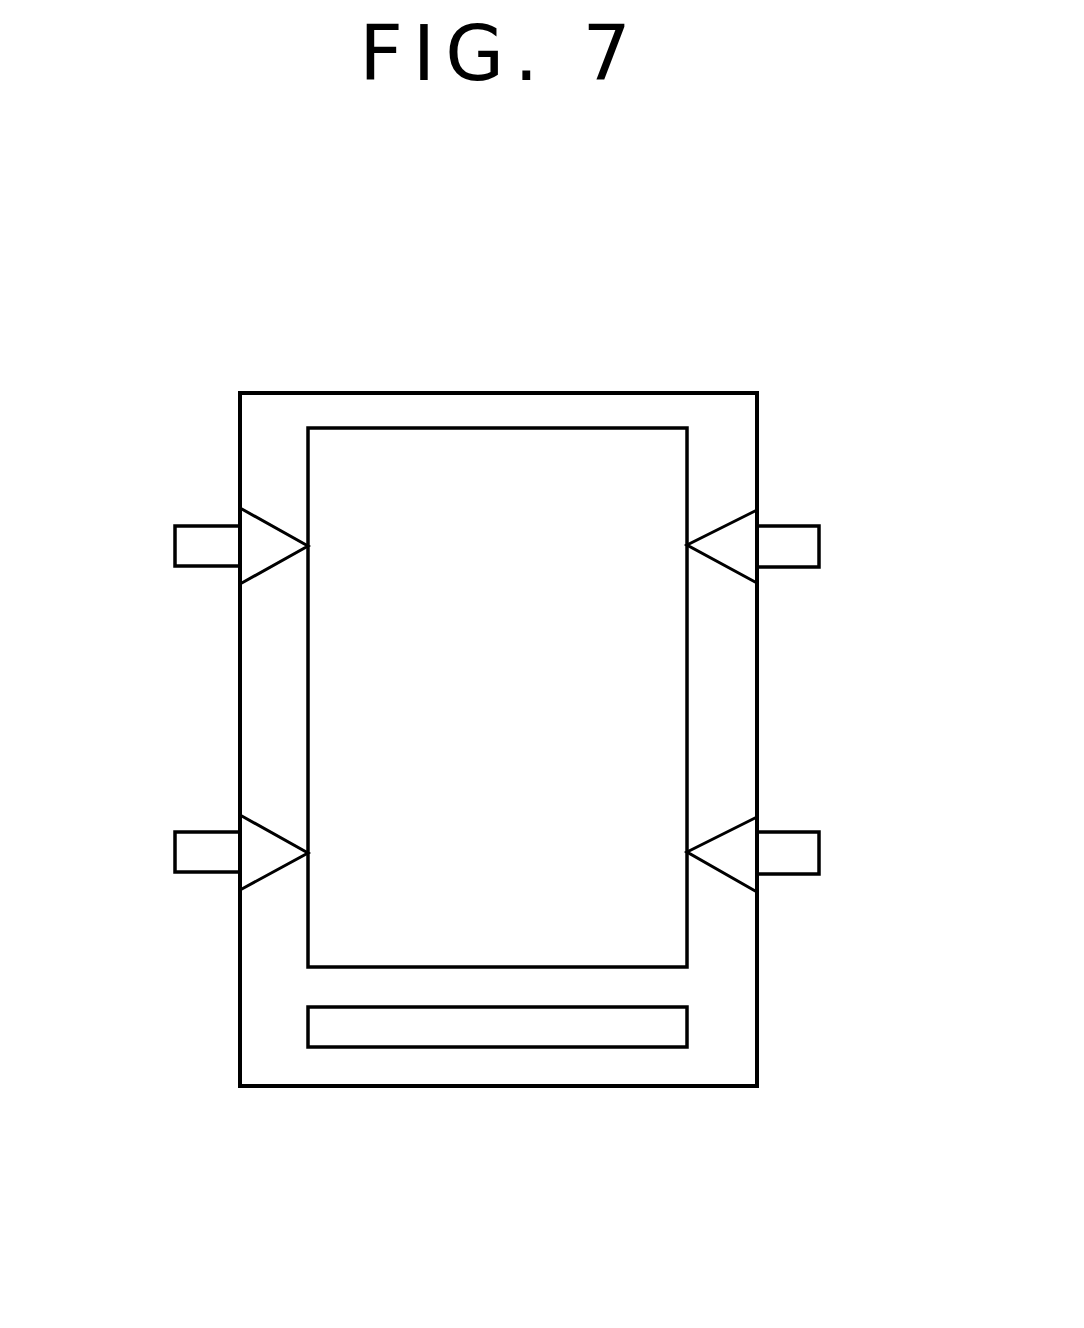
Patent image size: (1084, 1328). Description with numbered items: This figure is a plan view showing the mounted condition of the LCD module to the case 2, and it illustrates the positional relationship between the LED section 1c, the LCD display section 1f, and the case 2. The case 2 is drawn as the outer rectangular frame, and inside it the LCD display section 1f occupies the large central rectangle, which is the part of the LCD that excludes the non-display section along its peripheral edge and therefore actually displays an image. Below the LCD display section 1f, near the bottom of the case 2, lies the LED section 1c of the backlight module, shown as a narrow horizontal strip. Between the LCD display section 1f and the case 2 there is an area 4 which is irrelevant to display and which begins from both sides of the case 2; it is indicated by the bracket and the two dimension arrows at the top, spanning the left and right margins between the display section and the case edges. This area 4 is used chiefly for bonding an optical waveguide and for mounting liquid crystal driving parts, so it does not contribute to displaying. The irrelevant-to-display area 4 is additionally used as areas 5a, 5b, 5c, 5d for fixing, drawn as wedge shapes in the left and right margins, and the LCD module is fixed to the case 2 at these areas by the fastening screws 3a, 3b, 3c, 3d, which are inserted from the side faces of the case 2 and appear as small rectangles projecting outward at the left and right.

The case 2 is at (357, 1072).
The LCD display section 1f is at (308, 658).
The LED section 1c is at (625, 1035).
The area irrelevant to display 4 is at (240, 312).
The fastening screw 3a is at (175, 543).
The fastening screw 3b is at (819, 543).
The fastening screw 3c is at (175, 848).
The fastening screw 3d is at (819, 852).
The fixing area 5a is at (277, 517).
The fixing area 5b is at (732, 510).
The fixing area 5c is at (277, 823).
The fixing area 5d is at (730, 817).